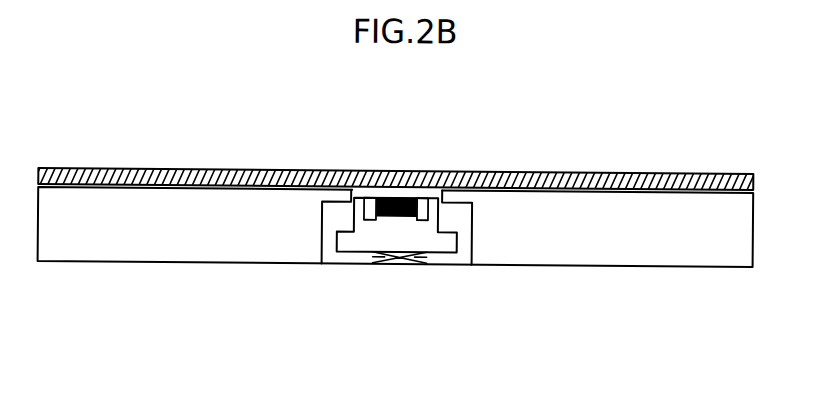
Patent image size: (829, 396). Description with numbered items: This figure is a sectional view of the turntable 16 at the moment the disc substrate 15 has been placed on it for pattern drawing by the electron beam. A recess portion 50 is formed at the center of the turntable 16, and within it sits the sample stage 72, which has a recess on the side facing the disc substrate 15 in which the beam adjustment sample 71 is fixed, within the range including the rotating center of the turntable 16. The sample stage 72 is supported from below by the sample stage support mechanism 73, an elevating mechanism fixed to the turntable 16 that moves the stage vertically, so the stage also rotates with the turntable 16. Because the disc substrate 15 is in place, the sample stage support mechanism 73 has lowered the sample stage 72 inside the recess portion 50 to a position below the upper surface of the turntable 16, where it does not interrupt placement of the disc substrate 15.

The disc substrate 15 is at (279, 172).
The turntable 16 is at (616, 267).
The recess portion 50 is at (455, 207).
The beam adjustment sample 71 is at (404, 197).
The sample stage 72 is at (337, 254).
The sample stage support mechanism 73 is at (393, 256).